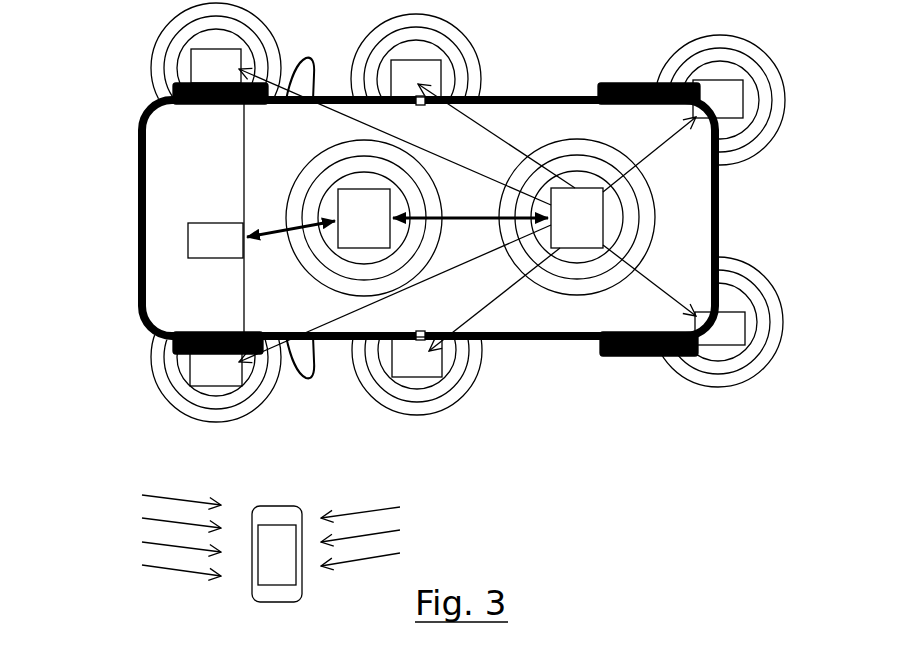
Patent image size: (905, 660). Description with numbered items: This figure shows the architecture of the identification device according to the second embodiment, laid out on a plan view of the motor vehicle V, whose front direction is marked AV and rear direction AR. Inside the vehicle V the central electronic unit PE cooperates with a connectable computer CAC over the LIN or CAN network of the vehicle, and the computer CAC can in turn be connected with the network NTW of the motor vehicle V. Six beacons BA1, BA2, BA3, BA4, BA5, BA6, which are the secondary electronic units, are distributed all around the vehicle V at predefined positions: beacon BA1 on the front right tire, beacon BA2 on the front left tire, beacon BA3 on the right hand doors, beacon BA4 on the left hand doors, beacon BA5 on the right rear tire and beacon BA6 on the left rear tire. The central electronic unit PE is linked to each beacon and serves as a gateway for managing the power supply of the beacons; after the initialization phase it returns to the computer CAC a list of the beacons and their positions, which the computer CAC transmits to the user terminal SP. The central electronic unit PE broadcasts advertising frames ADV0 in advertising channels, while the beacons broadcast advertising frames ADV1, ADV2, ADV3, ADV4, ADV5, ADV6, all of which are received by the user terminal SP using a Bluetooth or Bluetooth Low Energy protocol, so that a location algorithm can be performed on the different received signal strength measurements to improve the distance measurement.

The motor vehicle V is at (126, 202).
The front direction of vehicle AV is at (126, 230).
The rear direction of vehicle AR is at (737, 218).
The network of the motor vehicle NTW is at (215, 240).
The connectable computer CAC is at (364, 218).
The central electronic unit PE is at (577, 217).
The beacon BA1 is at (371, 127).
The beacon BA2 is at (370, 305).
The beacon BA3 is at (483, 124).
The beacon BA4 is at (476, 314).
The beacon BA5 is at (673, 136).
The beacon BA6 is at (674, 296).
The advertising frame ADV0 is at (583, 292).
The advertising frame ADV1 is at (229, 68).
The advertising frame ADV2 is at (216, 365).
The advertising frame ADV3 is at (432, 79).
The advertising frame ADV4 is at (417, 356).
The advertising frame ADV5 is at (731, 100).
The advertising frame ADV6 is at (730, 322).
The user terminal SP is at (271, 535).